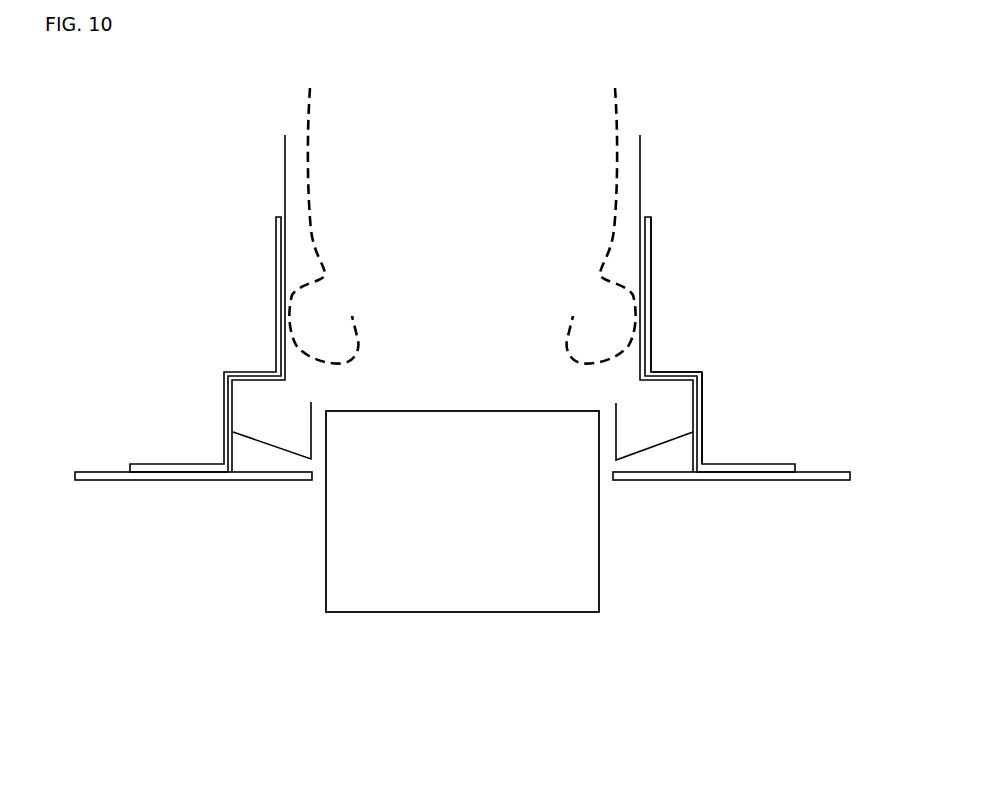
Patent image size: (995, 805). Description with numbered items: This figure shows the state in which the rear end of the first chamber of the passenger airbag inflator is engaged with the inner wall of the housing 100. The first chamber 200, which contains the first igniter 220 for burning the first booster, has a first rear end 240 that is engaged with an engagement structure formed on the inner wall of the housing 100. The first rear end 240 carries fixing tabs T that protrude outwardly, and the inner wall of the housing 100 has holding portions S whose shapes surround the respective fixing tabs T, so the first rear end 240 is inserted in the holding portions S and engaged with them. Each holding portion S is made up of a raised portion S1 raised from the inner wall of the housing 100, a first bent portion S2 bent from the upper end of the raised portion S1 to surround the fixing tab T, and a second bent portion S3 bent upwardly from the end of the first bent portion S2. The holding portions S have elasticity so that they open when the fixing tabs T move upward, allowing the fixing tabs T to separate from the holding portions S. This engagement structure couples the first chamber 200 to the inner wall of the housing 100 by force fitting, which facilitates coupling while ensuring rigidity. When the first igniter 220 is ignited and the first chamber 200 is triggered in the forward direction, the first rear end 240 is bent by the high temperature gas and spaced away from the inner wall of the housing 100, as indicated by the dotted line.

The first chamber 200 is at (617, 113).
The first rear end 240 is at (285, 357).
The holding portion S is at (713, 390).
The raised portion S1 is at (699, 423).
The first bent portion S2 is at (677, 372).
The second bent portion S3 is at (648, 298).
The fixing tab T is at (680, 555).
The housing 100 is at (767, 482).
The first igniter 220 is at (462, 592).